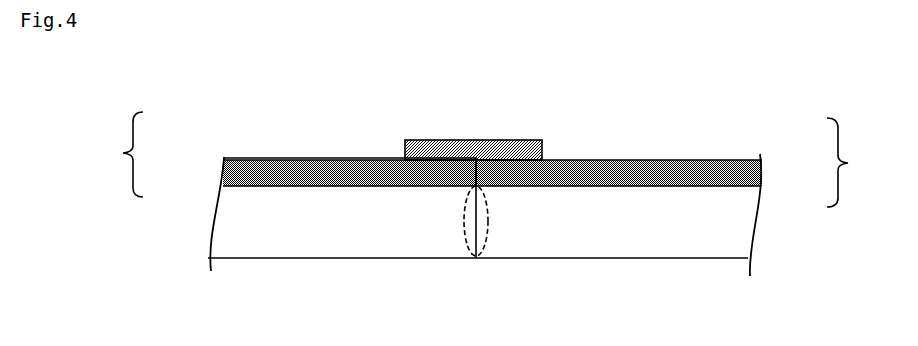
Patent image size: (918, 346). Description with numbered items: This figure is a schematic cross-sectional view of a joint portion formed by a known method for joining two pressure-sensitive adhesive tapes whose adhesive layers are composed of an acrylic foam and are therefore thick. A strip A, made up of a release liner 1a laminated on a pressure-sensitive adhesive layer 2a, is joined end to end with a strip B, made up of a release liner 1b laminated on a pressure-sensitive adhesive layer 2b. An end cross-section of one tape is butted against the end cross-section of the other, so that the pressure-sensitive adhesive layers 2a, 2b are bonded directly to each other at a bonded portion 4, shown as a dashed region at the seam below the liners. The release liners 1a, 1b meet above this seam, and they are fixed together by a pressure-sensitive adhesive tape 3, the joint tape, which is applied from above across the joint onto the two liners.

The release liner 1a is at (738, 163).
The release liner 1b is at (223, 160).
The pressure-sensitive adhesive layer 2a is at (732, 233).
The pressure-sensitive adhesive layer 2b is at (243, 233).
The pressure-sensitive adhesive tape 3 is at (463, 145).
The bonded portion 4 is at (487, 243).
The strip A is at (849, 162).
The strip B is at (120, 154).